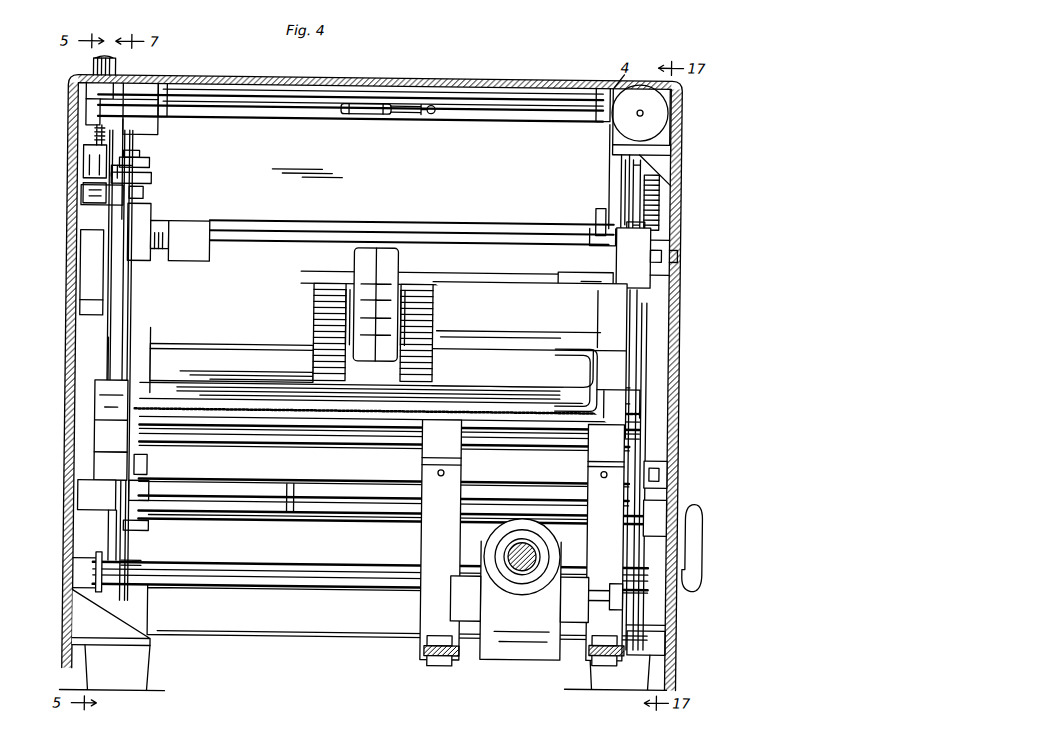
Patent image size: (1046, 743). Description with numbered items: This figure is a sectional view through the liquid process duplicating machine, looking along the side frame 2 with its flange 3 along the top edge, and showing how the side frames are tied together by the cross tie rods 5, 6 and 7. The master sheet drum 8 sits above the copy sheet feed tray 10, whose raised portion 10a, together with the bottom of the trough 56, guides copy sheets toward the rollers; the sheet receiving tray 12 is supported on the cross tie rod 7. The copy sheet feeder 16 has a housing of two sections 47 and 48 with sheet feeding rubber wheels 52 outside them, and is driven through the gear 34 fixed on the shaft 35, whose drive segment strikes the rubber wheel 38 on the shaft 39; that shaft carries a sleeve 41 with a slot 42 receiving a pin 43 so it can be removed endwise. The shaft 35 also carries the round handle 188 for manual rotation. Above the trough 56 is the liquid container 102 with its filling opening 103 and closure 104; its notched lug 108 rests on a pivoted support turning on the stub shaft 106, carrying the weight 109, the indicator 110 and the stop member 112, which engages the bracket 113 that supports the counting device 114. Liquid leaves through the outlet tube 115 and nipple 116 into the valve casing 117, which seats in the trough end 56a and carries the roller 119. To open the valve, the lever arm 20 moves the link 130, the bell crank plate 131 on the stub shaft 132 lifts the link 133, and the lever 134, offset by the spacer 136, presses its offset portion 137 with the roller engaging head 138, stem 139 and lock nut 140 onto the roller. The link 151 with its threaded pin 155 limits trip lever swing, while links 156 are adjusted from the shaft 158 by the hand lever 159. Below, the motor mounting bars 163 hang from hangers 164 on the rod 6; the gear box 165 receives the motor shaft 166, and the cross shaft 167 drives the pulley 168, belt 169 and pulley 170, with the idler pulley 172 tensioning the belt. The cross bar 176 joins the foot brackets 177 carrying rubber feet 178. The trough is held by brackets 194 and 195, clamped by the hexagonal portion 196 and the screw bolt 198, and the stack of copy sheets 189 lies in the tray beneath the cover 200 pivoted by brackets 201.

The side frame 2 is at (680, 368).
The flange 3 is at (135, 82).
The cross tie rod 5 is at (495, 120).
The cross tie rod 6 is at (348, 440).
The cross tie rod 7 is at (145, 544).
The master sheet drum 8 is at (492, 91).
The copy sheet feed tray 10 is at (310, 413).
The raised portion 10a is at (220, 372).
The sheet receiving tray 12 is at (314, 473).
The copy sheet feeder 16 is at (305, 318).
The lever arm 20 is at (140, 555).
The gear 34 is at (660, 187).
The shaft 35 is at (490, 244).
The rubber wheel 38 is at (99, 268).
The shaft 39 is at (465, 284).
The sleeve 41 is at (578, 284).
The slot 42 is at (590, 284).
The pin 43 is at (602, 286).
The housing section 47 is at (353, 261).
The housing section 48 is at (397, 261).
The sheet feeding rubber wheel 52 is at (432, 322).
The trough 56 is at (510, 329).
The trough end 56a is at (110, 340).
The container 102 is at (282, 155).
The filling opening 103 is at (410, 114).
The closure 104 is at (362, 114).
The stub shaft 106 is at (594, 226).
The notched lug 108 is at (596, 210).
The weight 109 is at (642, 256).
The indicator 110 is at (635, 215).
The stop member 112 is at (620, 174).
The bracket 113 is at (610, 150).
The counting device 114 is at (668, 141).
The outlet tube 115 is at (199, 246).
The nipple 116 is at (159, 238).
The valve casing 117 is at (149, 228).
The roller 119 is at (145, 196).
The link 130 is at (152, 531).
The bell crank plate 131 is at (150, 493).
The stub shaft 132 is at (150, 468).
The link 133 is at (131, 315).
The lever 134 is at (83, 203).
The spacer 136 is at (83, 193).
The offset portion 137 is at (105, 168).
The roller engaging head 138 is at (151, 181).
The stem 139 is at (139, 156).
The lock nut 140 is at (149, 168).
The link 151 is at (118, 538).
The adjustable threaded pin 155 is at (81, 493).
The link 156 is at (102, 597).
The shaft 158 is at (318, 588).
The hand lever 159 is at (706, 544).
The motor mounting bar 163 is at (596, 654).
The hanger 164 is at (616, 505).
The gear box 165 is at (532, 617).
The motor shaft 166 is at (542, 554).
The cross shaft 167 is at (600, 583).
The pulley 168 is at (655, 625).
The belt 169 is at (646, 354).
The pulley 170 is at (653, 202).
The idler pulley 172 is at (652, 508).
The cross bar 176 is at (254, 638).
The foot bracket 177 is at (668, 643).
The rubber foot 178 is at (636, 678).
The handle 188 is at (680, 254).
The stack of copy sheets 189 is at (355, 404).
The bracket 194 is at (95, 402).
The bracket 195 is at (652, 400).
The hexagonal portion 196 is at (120, 477).
The screw bolt 198 is at (660, 470).
The cover 200 is at (300, 87).
The bracket 201 is at (596, 88).